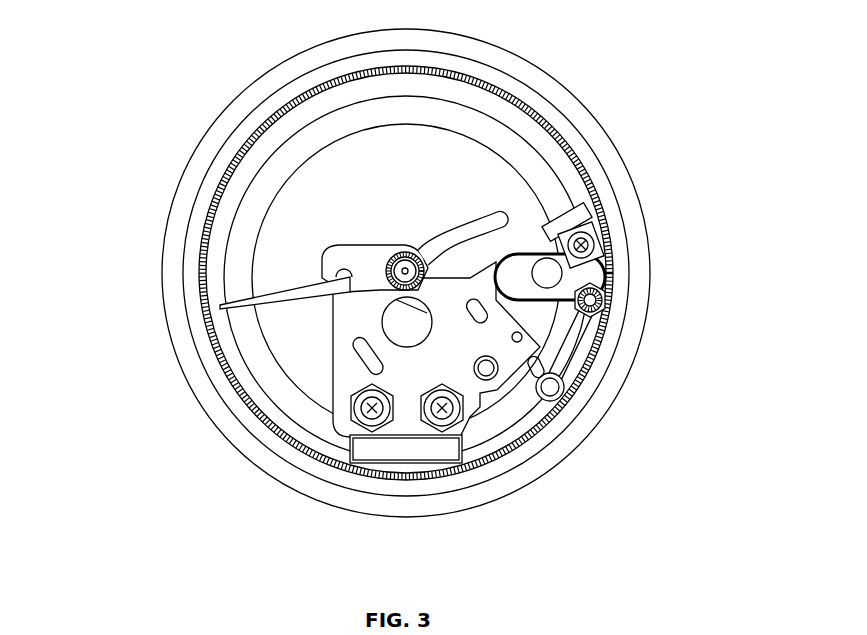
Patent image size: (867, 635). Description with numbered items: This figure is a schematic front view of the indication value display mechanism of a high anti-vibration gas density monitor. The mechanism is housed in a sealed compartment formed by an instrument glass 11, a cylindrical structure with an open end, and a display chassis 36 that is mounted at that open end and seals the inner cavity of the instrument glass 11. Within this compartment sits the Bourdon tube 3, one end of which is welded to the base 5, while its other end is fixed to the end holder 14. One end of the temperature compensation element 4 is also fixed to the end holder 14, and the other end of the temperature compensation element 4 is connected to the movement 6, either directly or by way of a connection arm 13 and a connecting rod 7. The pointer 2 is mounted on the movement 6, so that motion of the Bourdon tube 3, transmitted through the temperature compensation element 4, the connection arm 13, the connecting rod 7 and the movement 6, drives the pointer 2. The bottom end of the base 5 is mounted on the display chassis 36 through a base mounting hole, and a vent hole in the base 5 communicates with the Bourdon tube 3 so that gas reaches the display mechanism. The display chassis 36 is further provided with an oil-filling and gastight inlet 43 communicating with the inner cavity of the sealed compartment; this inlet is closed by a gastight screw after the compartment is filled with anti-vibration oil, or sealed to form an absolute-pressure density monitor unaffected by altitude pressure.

The instrument glass 11 is at (218, 137).
The pointer 2 is at (292, 292).
The Bourdon tube 3 is at (250, 355).
The temperature compensation element 4 is at (556, 275).
The base 5 is at (405, 453).
The movement 6 is at (352, 360).
The connecting rod 7 is at (574, 352).
The connection arm 13 is at (600, 295).
The end holder 14 is at (575, 212).
The display chassis 36 is at (498, 406).
The oil-filling and gastight inlet 43 is at (590, 239).